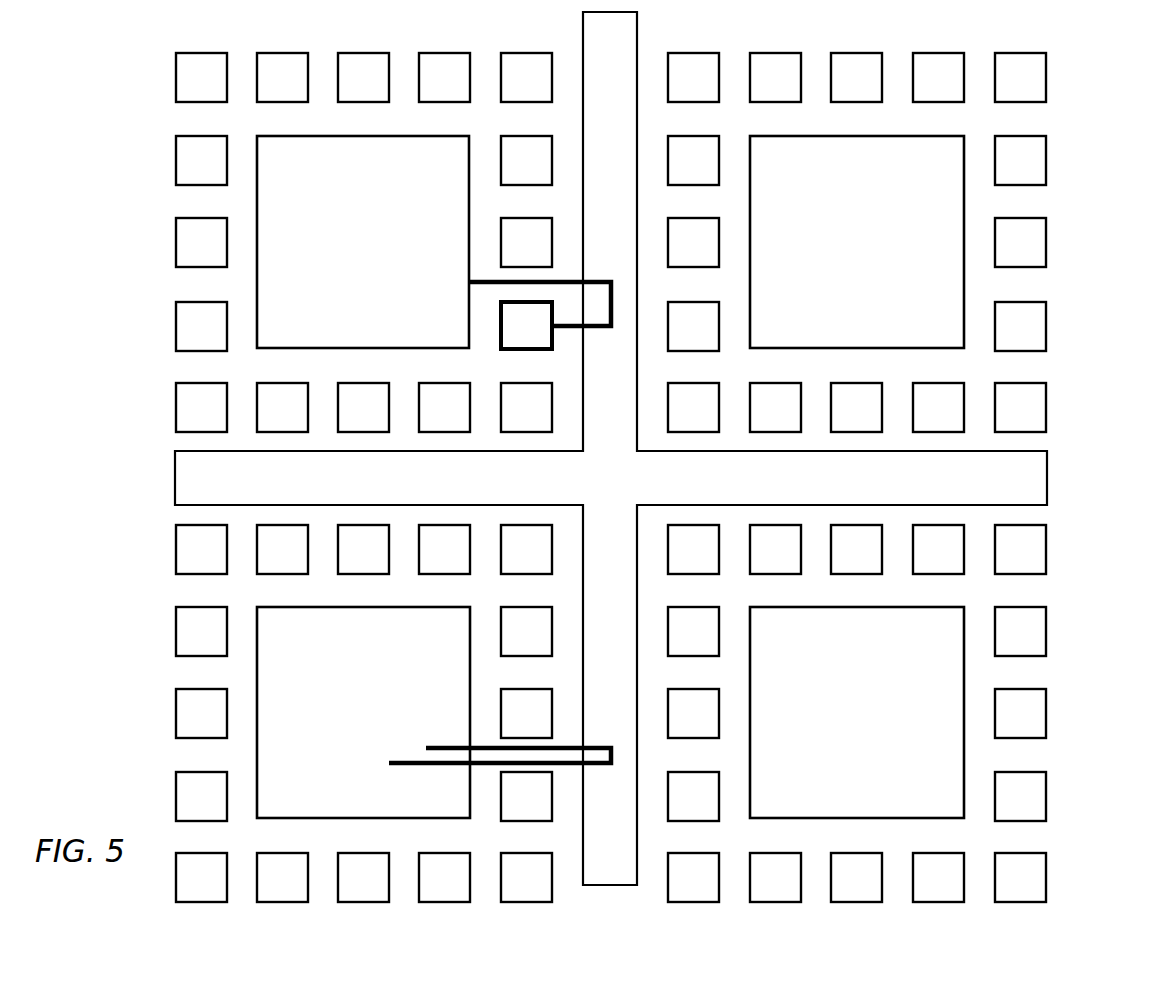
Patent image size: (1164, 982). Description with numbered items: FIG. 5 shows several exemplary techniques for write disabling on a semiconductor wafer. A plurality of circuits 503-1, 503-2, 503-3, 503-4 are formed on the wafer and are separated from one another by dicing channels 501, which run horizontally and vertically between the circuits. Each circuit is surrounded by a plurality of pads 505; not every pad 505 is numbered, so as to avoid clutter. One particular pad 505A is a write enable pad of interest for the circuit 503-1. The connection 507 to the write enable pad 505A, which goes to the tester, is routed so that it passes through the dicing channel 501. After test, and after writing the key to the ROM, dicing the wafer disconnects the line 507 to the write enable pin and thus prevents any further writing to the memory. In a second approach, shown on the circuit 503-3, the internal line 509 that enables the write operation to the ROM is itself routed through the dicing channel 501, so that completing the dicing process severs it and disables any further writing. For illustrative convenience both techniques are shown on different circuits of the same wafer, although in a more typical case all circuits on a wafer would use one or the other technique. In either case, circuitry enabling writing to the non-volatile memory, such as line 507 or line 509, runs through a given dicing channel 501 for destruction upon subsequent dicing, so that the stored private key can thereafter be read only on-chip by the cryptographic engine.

The dicing channel 501 is at (988, 498).
The circuit 503-1 is at (407, 282).
The circuit 503-2 is at (901, 282).
The circuit 503-3 is at (407, 753).
The circuit 503-4 is at (901, 753).
The pad 505 is at (176, 83).
The write enable pad 505A is at (527, 350).
The connection 507 is at (587, 281).
The internal line 509 is at (588, 746).